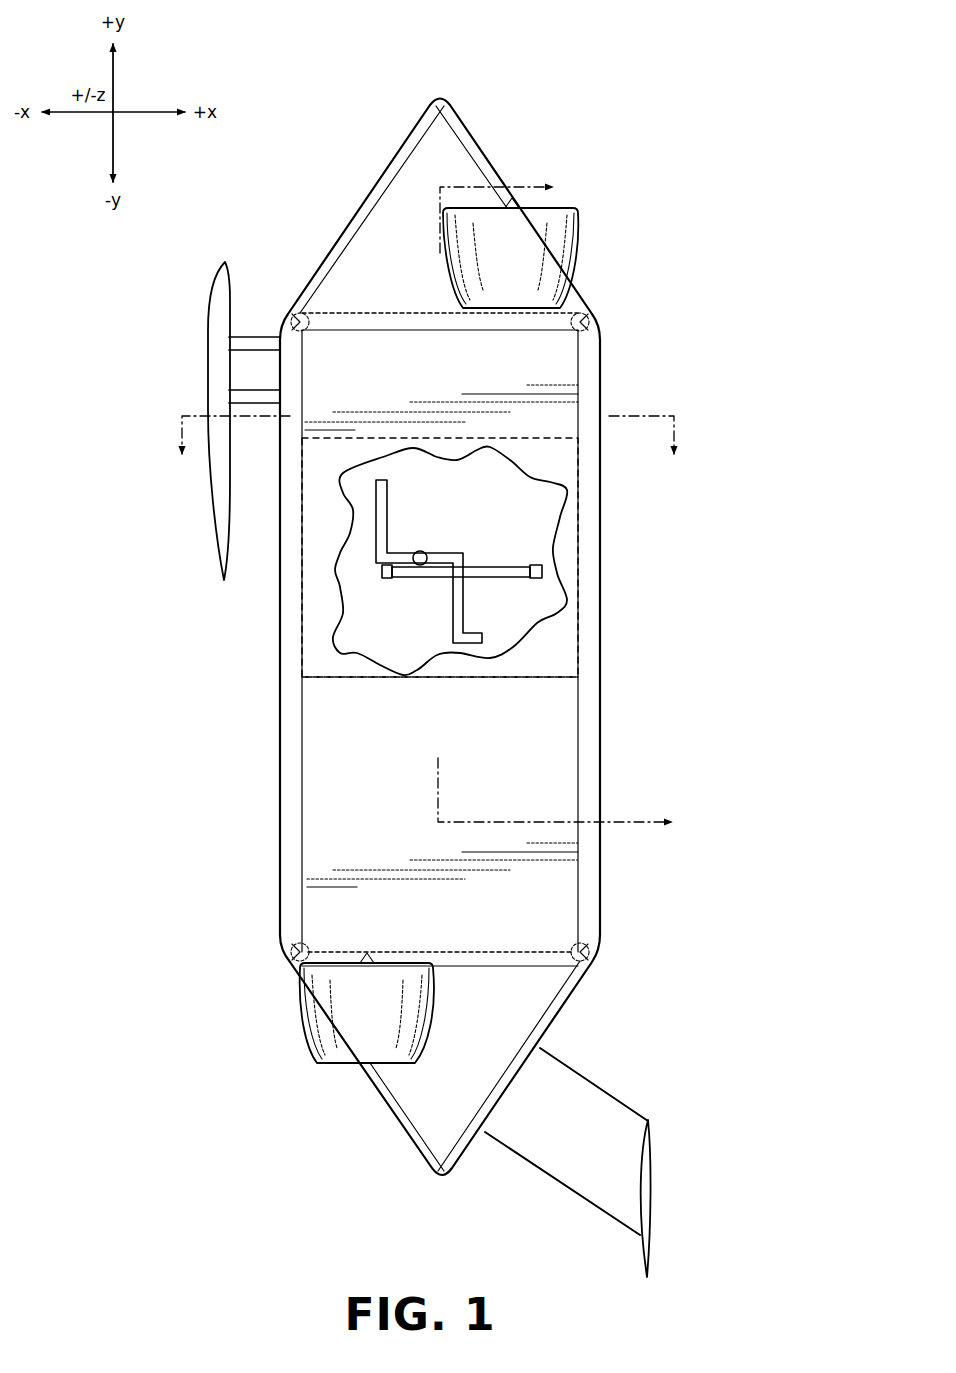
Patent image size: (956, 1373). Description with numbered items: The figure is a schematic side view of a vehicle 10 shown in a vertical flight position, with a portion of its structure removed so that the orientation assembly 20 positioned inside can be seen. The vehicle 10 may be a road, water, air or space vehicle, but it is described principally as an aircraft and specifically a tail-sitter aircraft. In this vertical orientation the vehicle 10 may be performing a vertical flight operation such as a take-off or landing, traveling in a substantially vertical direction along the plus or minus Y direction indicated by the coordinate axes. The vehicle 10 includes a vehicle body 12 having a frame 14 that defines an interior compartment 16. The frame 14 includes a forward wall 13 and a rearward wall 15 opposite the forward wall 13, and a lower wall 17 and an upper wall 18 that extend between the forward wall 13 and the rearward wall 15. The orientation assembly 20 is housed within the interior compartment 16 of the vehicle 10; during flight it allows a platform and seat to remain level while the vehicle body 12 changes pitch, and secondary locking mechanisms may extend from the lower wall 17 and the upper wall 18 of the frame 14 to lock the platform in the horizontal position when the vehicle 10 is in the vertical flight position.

The vehicle 10 is at (656, 161).
The vehicle body 12 is at (610, 362).
The forward wall 13 is at (455, 432).
The frame 14 is at (565, 698).
The rearward wall 15 is at (358, 680).
The interior compartment 16 is at (509, 668).
The lower wall 17 is at (582, 551).
The upper wall 18 is at (300, 600).
The orientation assembly 20 is at (486, 542).